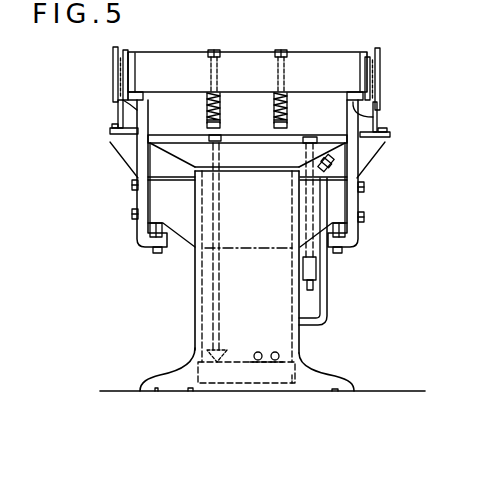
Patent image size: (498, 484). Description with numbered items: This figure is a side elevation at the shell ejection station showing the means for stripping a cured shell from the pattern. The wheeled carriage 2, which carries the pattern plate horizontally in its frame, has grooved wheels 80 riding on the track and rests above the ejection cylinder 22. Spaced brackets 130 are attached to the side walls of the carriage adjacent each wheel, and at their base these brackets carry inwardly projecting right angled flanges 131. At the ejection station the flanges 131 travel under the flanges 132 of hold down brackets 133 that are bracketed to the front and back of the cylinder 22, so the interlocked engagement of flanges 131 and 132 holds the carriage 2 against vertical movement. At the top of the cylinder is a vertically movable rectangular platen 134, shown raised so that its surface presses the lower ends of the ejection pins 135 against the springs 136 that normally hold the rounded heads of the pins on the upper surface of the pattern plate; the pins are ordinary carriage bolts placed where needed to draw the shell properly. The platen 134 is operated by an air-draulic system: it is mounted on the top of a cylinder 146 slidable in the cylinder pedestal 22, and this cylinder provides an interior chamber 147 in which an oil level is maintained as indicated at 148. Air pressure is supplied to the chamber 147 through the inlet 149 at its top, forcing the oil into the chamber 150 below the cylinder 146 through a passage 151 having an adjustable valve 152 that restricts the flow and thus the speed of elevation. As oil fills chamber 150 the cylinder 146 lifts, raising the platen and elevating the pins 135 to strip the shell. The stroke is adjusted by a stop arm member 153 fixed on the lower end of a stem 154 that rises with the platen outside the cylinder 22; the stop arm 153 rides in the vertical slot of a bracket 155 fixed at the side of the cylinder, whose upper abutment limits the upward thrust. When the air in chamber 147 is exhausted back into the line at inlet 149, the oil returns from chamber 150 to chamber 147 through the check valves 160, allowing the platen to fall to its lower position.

The wheeled carriage 2 is at (170, 62).
The ejection cylinder 22 is at (194, 290).
The grooved wheels 80 is at (114, 64).
The brackets 130 is at (372, 80).
The right angled flanges 131 is at (137, 103).
The flanges 132 is at (145, 98).
The hold down brackets 133 is at (143, 166).
The platen 134 is at (282, 139).
The ejection pins 135 is at (221, 65).
The springs 136 is at (221, 112).
The cylinder 146 is at (299, 332).
The interior chamber 147 is at (257, 208).
The oil level 148 is at (238, 242).
The inlet 149 is at (330, 163).
The chamber 150 is at (294, 373).
The passage 151 is at (236, 361).
The adjustable valve 152 is at (212, 353).
The stop arm member 153 is at (310, 265).
The stem 154 is at (310, 200).
The bracket 155 is at (323, 296).
The check valves 160 is at (296, 350).